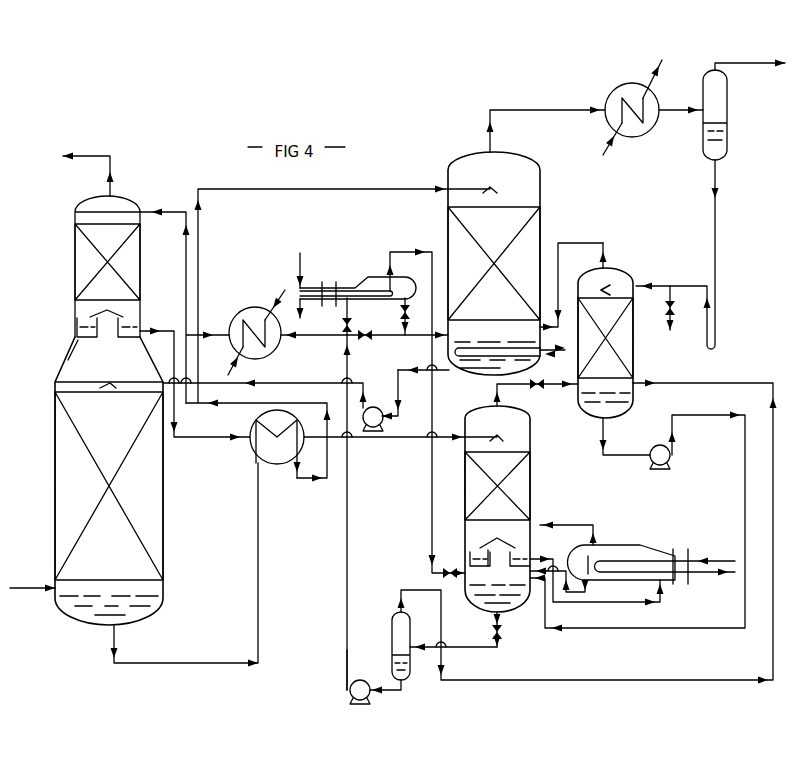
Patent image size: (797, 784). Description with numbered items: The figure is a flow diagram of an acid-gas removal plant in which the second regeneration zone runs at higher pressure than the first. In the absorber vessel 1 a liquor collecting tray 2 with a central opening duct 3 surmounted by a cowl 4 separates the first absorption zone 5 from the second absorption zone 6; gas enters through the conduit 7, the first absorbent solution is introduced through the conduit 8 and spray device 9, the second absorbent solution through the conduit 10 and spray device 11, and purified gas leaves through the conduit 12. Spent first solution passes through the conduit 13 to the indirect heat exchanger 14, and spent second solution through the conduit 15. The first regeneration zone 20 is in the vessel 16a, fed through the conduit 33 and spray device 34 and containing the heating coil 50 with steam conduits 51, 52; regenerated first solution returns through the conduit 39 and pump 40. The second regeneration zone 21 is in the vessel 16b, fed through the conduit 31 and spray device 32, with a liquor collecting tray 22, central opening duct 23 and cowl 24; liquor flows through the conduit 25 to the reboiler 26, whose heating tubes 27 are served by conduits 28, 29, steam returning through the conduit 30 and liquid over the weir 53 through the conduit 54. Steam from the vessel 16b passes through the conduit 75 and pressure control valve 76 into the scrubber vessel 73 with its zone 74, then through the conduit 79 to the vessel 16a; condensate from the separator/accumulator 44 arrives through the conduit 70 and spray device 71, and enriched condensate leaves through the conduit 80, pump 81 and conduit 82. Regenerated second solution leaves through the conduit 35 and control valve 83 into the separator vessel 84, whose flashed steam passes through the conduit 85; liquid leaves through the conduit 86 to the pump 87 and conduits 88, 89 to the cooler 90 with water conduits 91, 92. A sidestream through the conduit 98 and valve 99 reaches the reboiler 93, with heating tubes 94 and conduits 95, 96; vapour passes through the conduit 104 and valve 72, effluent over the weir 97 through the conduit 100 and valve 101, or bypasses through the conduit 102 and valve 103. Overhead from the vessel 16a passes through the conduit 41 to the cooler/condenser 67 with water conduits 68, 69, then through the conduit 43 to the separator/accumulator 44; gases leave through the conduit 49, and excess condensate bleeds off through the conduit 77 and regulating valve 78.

The absorber vessel 1 is at (150, 364).
The liquor collecting tray 2 is at (70, 351).
The central opening duct 3 is at (110, 330).
The cowl 4 is at (95, 308).
The first absorption zone 5 is at (150, 487).
The second absorption zone 6 is at (130, 262).
The conduit 7 is at (40, 590).
The conduit 8 is at (374, 394).
The spray device 9 is at (105, 386).
The conduit 10 is at (186, 212).
The spray device 11 is at (75, 214).
The conduit 12 is at (113, 186).
The conduit 13 is at (117, 650).
The indirect heat exchanger 14 is at (272, 455).
The conduit 15 is at (150, 330).
The vessel 16a is at (531, 200).
The vessel 16b is at (531, 443).
The first regeneration zone 20 is at (527, 245).
The second regeneration zone 21 is at (526, 494).
The liquor collecting tray 22 is at (486, 568).
The central opening duct 23 is at (484, 560).
The cowl 24 is at (484, 546).
The conduit 25 is at (538, 558).
The reboiler 26 is at (626, 545).
The heating tubes 27 is at (645, 562).
The conduit 28 is at (706, 560).
The conduit 29 is at (706, 573).
The conduit 30 is at (560, 525).
The conduit 31 is at (312, 436).
The spray device 32 is at (488, 441).
The conduit 33 is at (310, 482).
The spray device 34 is at (486, 190).
The conduit 35 is at (476, 649).
The conduit 39 is at (400, 395).
The pump 40 is at (384, 421).
The conduit 41 is at (493, 136).
The conduit 43 is at (676, 110).
The separator/accumulator 44 is at (729, 113).
The conduit 49 is at (722, 65).
The heating coil 50 is at (487, 348).
The conduit 51 is at (560, 329).
The conduit 52 is at (552, 357).
The weir 53 is at (589, 574).
The conduit 54 is at (592, 592).
The cooler/condenser 67 is at (618, 96).
The conduit 68 is at (608, 157).
The conduit 69 is at (653, 73).
The conduit 70 is at (718, 186).
The spray device 71 is at (606, 286).
The valve 72 is at (435, 575).
The scrubber vessel 73 is at (590, 278).
The zone 74 is at (626, 339).
The conduit 75 is at (501, 396).
The pressure control valve 76 is at (538, 389).
The conduit 77 is at (676, 321).
The regulating valve 78 is at (676, 303).
The conduit 79 is at (590, 243).
The conduit 80 is at (606, 432).
The pump 81 is at (668, 460).
The conduit 82 is at (678, 432).
The control valve 83 is at (504, 625).
The separator vessel 84 is at (392, 640).
The conduit 85 is at (676, 383).
The conduit 86 is at (405, 691).
The pump 87 is at (350, 688).
The conduit 88 is at (347, 654).
The conduit 89 is at (326, 338).
The cooler 90 is at (243, 320).
The conduit 91 is at (232, 364).
The conduit 92 is at (278, 296).
The reboiler 93 is at (382, 277).
The heating tubes 94 is at (345, 290).
The conduit 95 is at (303, 265).
The conduit 96 is at (304, 312).
The weir 97 is at (420, 287).
The conduit 98 is at (350, 313).
The valve 99 is at (367, 327).
The conduit 100 is at (415, 312).
The valve 101 is at (418, 300).
The conduit 102 is at (384, 334).
The valve 103 is at (365, 340).
The conduit 104 is at (408, 252).